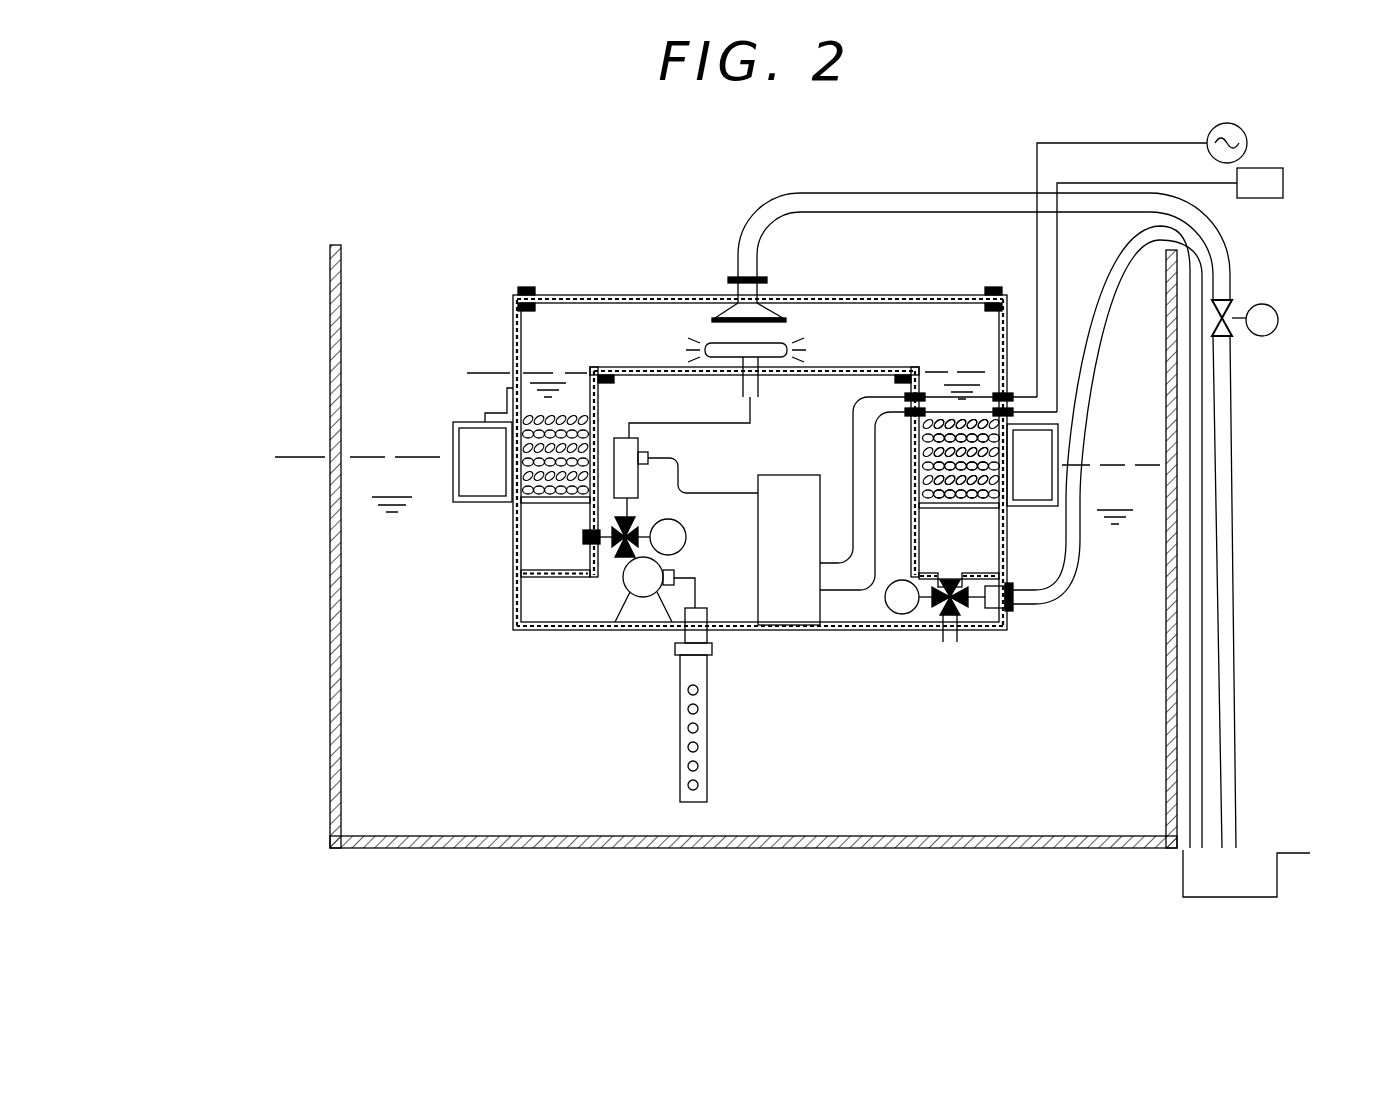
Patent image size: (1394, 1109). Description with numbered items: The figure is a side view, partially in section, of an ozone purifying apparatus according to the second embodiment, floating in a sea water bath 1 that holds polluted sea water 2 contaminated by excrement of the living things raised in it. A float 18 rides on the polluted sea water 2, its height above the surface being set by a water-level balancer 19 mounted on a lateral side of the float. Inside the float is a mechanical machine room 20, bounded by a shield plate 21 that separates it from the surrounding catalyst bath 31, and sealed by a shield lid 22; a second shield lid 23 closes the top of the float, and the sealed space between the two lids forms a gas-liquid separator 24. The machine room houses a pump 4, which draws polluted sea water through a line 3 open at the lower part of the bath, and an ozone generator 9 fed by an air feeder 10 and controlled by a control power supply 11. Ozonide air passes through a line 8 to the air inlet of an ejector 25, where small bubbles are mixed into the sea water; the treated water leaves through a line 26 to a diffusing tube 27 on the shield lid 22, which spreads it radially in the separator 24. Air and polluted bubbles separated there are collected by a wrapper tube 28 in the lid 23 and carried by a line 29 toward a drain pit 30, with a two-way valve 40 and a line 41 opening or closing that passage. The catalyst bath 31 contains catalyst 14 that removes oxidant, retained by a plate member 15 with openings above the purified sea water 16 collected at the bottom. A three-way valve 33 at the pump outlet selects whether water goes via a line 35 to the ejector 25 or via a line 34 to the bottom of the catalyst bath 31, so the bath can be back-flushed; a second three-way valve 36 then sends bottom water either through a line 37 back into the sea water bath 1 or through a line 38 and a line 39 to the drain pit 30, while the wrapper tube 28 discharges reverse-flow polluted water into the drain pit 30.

The sea water bath 1 is at (328, 320).
The polluted sea water 2 is at (392, 455).
The line 3 is at (708, 770).
The pump 4 is at (628, 600).
The line 8 is at (735, 492).
The ozone generator 9 is at (800, 475).
The air feeder 10 is at (1284, 186).
The control power supply 11 is at (1250, 140).
The catalyst 14 is at (512, 505).
The plate member 15 is at (530, 567).
The purified sea water 16 is at (985, 565).
The float 18 is at (812, 632).
The water-level balancer 19 is at (468, 503).
The mechanical machine room 20 is at (730, 615).
The shield plate 21 is at (606, 386).
The shield lid 22 is at (848, 367).
The shield lid 23 is at (930, 300).
The gas-liquid separator 24 is at (608, 330).
The ejector 25 is at (650, 447).
The line 26 is at (752, 412).
The diffusing tube 27 is at (803, 340).
The wrapper tube 28 is at (727, 300).
The line 29 is at (915, 195).
The drain pit 30 is at (1255, 855).
The catalyst bath 31 is at (548, 370).
The three-way valve 33 is at (690, 545).
The line 34 is at (612, 550).
The line 35 is at (640, 522).
The three-way valve 36 is at (905, 615).
The line 37 is at (955, 645).
The line 38 is at (1010, 614).
The line 39 is at (1063, 612).
The two-way valve 40 is at (1280, 322).
The line 41 is at (1205, 582).